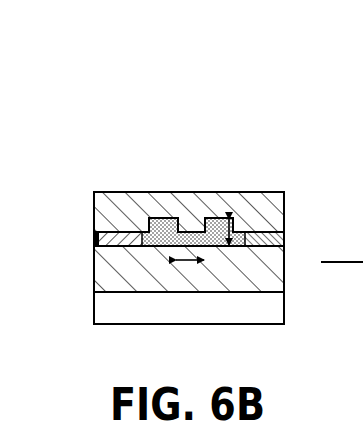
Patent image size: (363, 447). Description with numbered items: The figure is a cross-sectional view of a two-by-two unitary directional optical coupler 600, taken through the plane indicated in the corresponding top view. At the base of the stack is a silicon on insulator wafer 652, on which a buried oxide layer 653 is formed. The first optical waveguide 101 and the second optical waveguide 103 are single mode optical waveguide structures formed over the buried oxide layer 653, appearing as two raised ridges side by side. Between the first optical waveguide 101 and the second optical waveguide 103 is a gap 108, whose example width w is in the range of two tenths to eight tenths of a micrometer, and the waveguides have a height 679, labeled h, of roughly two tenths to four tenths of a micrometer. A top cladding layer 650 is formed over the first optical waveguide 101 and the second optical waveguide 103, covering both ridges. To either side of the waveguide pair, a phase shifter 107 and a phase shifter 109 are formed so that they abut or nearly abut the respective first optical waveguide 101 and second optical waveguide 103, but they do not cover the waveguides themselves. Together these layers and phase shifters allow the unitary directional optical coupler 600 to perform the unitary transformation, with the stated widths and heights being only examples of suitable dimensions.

The unitary directional optical coupler 600 is at (266, 98).
The top cladding layer 650 is at (193, 200).
The phase shifter 107 is at (120, 228).
The phase shifter 109 is at (262, 231).
The first optical waveguide 101 is at (163, 217).
The second optical waveguide 103 is at (232, 217).
The buried oxide layer 653 is at (100, 271).
The silicon on insulator wafer 652 is at (278, 304).
The gap 108 is at (191, 265).
The waveguide height 679 is at (228, 247).